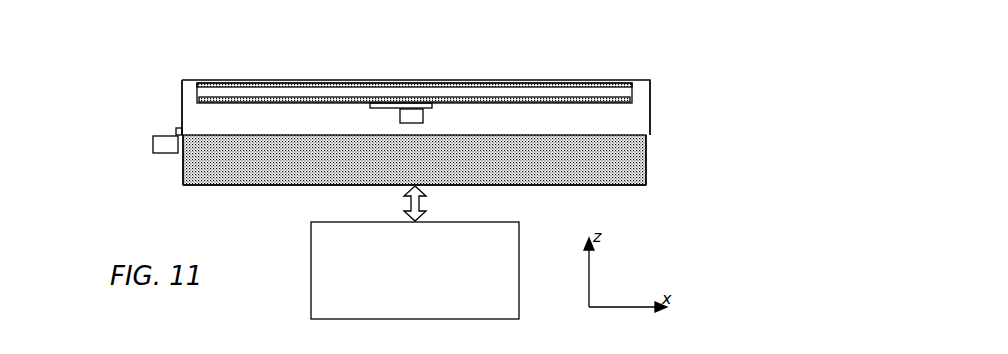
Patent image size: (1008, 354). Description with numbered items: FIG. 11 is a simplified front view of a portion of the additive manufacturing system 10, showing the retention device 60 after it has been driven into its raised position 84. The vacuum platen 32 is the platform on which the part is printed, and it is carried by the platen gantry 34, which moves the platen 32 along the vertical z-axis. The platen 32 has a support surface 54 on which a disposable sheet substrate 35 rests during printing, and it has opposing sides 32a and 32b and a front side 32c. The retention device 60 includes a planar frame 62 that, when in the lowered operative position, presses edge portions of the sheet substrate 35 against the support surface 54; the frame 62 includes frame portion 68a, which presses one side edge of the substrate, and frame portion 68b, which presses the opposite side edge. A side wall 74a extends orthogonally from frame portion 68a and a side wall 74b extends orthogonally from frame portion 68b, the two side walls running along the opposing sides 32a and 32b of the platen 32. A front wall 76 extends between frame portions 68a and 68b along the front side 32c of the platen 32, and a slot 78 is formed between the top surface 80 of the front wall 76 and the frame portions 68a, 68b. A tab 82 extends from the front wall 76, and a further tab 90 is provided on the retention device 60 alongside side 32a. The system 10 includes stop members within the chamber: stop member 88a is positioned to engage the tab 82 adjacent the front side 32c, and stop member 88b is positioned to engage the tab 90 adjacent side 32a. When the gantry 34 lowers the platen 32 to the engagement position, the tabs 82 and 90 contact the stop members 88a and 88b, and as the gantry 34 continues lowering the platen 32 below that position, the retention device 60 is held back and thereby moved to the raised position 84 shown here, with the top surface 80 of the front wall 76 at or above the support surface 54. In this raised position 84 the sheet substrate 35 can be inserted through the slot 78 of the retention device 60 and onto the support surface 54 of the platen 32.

The system 10 is at (700, 66).
The vacuum platen 32 is at (646, 185).
The side of platen 32a is at (183, 160).
The side of platen 32b is at (646, 150).
The front side of platen 32c is at (198, 185).
The platen gantry 34 is at (311, 222).
The sheet substrate 35 is at (335, 99).
The support surface 54 is at (516, 80).
The retention device 60 is at (648, 125).
The frame 62 is at (209, 80).
The frame portion 68a is at (197, 80).
The frame portion 68b is at (637, 80).
The side wall 74a is at (650, 93).
The side wall 74b is at (182, 93).
The front wall 76 is at (261, 125).
The slot 78 is at (204, 92).
The top surface of front wall 80 is at (289, 90).
The tab 82 is at (375, 106).
The raised position 84 is at (121, 62).
The stop member 88a is at (423, 116).
The stop member 88b is at (153, 143).
The tab 90 is at (178, 130).